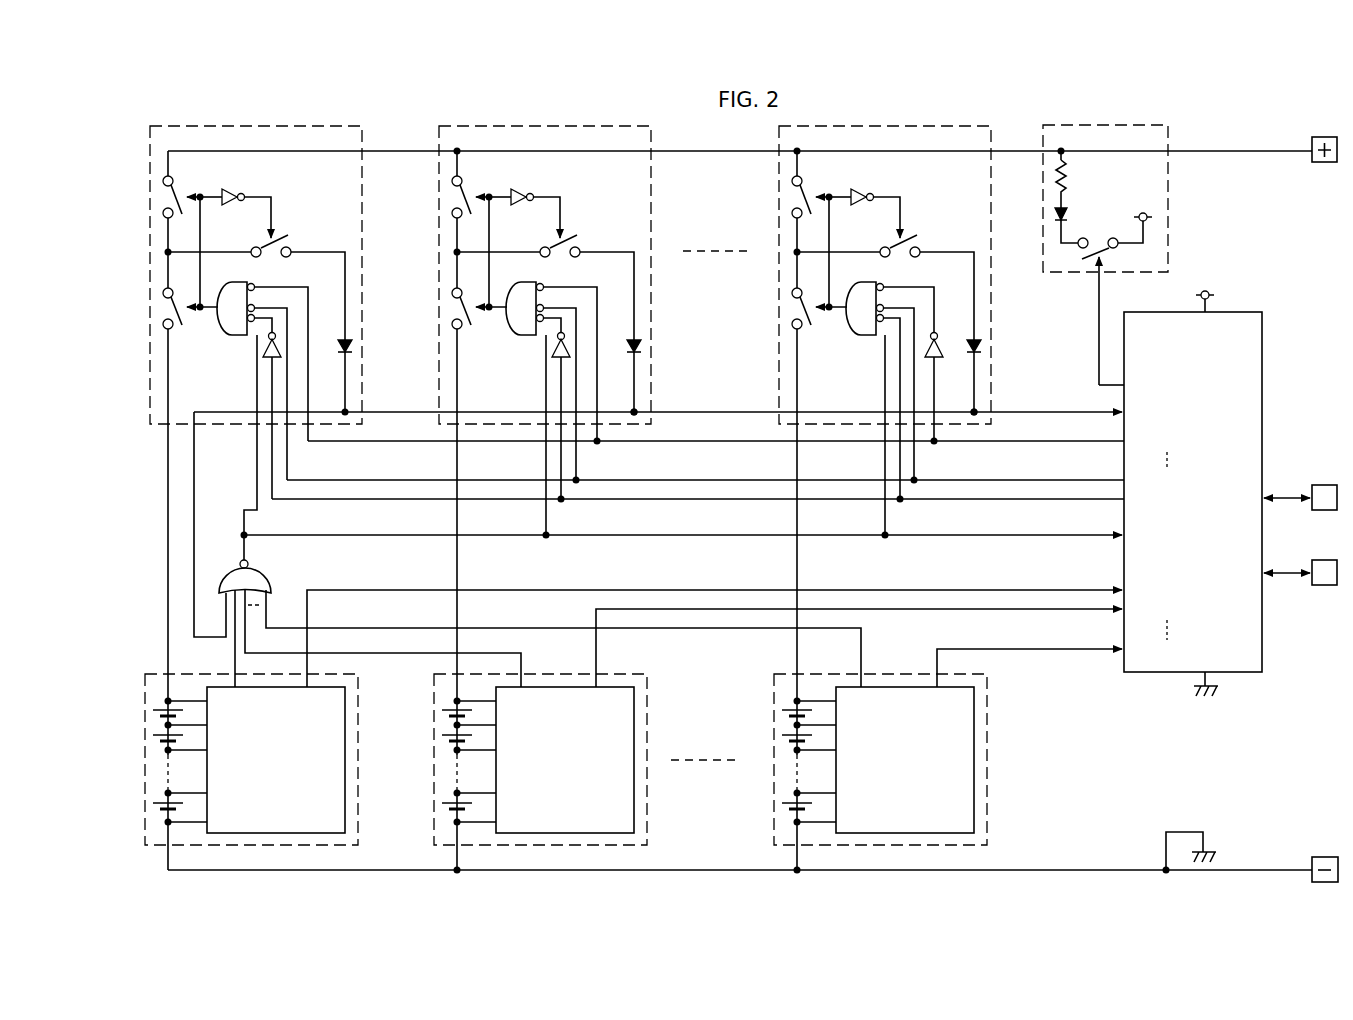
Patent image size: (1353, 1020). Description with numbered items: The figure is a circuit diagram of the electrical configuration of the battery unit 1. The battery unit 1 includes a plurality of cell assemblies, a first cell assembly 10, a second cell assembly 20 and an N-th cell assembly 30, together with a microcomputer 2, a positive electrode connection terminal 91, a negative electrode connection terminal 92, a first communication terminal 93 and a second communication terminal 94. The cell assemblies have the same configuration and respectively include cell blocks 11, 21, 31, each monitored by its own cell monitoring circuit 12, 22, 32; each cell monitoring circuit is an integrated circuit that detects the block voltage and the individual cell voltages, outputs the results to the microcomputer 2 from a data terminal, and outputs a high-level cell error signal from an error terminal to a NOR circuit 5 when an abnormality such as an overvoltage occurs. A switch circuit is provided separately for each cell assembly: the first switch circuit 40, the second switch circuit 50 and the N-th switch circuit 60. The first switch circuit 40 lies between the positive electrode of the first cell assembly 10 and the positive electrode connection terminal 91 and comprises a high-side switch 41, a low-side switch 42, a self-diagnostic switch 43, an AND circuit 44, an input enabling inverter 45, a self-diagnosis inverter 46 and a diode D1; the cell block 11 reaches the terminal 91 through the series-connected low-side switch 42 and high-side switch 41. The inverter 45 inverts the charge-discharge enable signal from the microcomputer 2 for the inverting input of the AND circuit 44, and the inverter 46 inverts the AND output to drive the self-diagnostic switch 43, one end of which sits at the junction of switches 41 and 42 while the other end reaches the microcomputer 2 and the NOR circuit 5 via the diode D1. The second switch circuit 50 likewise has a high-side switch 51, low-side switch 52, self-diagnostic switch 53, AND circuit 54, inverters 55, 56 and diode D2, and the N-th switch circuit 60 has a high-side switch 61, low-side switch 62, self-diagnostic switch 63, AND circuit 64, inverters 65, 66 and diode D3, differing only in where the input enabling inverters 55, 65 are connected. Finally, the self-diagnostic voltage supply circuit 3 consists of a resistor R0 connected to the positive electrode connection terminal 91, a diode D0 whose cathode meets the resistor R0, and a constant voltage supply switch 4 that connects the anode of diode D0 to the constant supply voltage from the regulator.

The battery unit 1 is at (127, 151).
The microcomputer 2 is at (1238, 312).
The self-diagnostic voltage supply circuit 3 is at (1148, 129).
The constant voltage supply switch 4 is at (1106, 252).
The NOR circuit 5 is at (234, 571).
The first cell assembly 10 is at (358, 704).
The cell block 11 is at (162, 698).
The cell monitoring circuit 12 is at (346, 736).
The second cell assembly 20 is at (547, 769).
The cell block 21 is at (450, 769).
The cell monitoring circuit 22 is at (593, 760).
The N-th cell assembly 30 is at (887, 769).
The cell block 31 is at (790, 769).
The cell monitoring circuit 32 is at (933, 760).
The first switch circuit 40 is at (336, 129).
The high-side switch 41 is at (162, 198).
The low-side switch 42 is at (162, 310).
The self-diagnostic switch 43 is at (256, 247).
The AND circuit 44 is at (219, 335).
The input enabling inverter 45 is at (263, 356).
The self-diagnosis inverter 46 is at (229, 194).
The second switch circuit 50 is at (533, 402).
The high-side switch 51 is at (445, 197).
The low-side switch 52 is at (445, 308).
The self-diagnostic switch 53 is at (545, 282).
The AND circuit 54 is at (511, 317).
The input enabling inverter 55 is at (541, 416).
The inverter 56 is at (524, 201).
The N-th switch circuit 60 is at (873, 402).
The high-side switch 61 is at (785, 197).
The low-side switch 62 is at (785, 308).
The self-diagnostic switch 63 is at (885, 282).
The AND circuit 64 is at (851, 317).
The input enabling inverter 65 is at (944, 387).
The inverter 66 is at (864, 201).
The positive electrode connection terminal 91 is at (1316, 137).
The negative electrode connection terminal 92 is at (1318, 857).
The first communication terminal 93 is at (1314, 485).
The second communication terminal 94 is at (1314, 560).
The diode D0 is at (1068, 219).
The diode D1 is at (338, 343).
The diode D2 is at (620, 365).
The diode D3 is at (961, 365).
The resistor R0 is at (1068, 172).